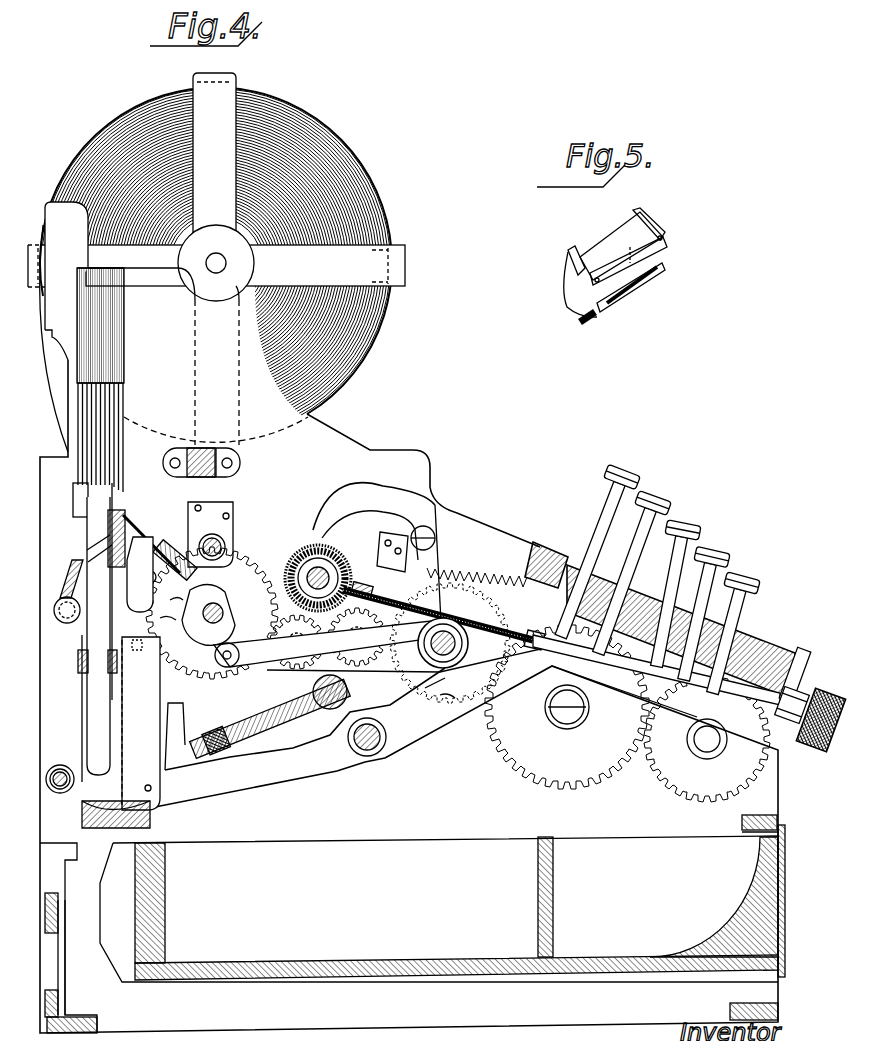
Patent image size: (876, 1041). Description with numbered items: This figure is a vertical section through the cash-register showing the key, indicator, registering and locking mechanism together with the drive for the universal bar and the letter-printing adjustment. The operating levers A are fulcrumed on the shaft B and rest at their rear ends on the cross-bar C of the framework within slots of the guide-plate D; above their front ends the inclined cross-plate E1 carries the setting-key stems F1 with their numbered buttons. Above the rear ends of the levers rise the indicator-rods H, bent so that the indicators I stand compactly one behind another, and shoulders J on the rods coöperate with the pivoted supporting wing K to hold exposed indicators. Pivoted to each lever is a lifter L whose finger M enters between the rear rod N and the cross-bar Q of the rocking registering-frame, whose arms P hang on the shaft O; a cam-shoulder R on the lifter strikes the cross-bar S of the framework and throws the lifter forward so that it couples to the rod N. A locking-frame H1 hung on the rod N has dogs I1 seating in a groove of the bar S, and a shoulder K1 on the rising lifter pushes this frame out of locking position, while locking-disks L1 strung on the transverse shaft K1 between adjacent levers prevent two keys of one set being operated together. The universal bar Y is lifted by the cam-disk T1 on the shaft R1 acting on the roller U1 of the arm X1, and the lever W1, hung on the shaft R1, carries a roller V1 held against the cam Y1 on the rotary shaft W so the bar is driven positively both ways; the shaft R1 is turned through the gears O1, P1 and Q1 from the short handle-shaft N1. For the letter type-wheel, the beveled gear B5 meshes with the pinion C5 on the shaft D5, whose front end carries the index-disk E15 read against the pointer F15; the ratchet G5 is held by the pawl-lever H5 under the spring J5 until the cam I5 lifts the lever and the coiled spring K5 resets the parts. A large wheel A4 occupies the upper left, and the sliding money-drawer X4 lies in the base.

In FIG. 4, the main spring wheel A4 is at (371, 352).
In FIG. 4, the indicators I is at (122, 340).
In FIG. 4, the bent lever H5 is at (362, 493).
In FIG. 4, the ratchet G5 is at (302, 546).
In FIG. 4, the beveled gear B5 is at (380, 555).
In FIG. 4, the beveled pinion C5 is at (360, 582).
In FIG. 4, the coiled spring K5 is at (496, 622).
In FIG. 4, the spring J5 is at (478, 571).
In FIG. 4, the shaft D5 is at (537, 632).
In FIG. 4, the end plates P is at (190, 520).
In FIG. 4, the shaft O is at (226, 548).
In FIG. 4, the rotary shaft W is at (214, 603).
In FIG. 4, the cross-bar Q is at (179, 602).
In FIG. 4, the fingers M is at (170, 624).
In FIG. 4, the cam Y1 is at (205, 645).
In FIG. 4, the lever W1 is at (255, 608).
In FIG. 4, the roller V1 is at (226, 668).
In FIG. 4, the gear Q1 is at (464, 702).
In FIG. 4, the cam-disk T1 is at (500, 668).
In FIG. 4, the shaft R1 is at (447, 668).
In FIG. 4, the roller U1 is at (444, 702).
In FIG. 4, the cam I5 is at (430, 686).
In FIG. 4, the gear P1 is at (609, 782).
In FIG. 4, the gear O1 is at (695, 800).
In FIG. 4, the short shaft N1 is at (709, 760).
In FIG. 4, the inclined cross-plate E1 is at (553, 546).
In FIG. 4, the setting-keys F1 is at (632, 537).
In FIG. 4, the index-disk E15 is at (808, 622).
In FIG. 4, the fixed pointer F15 is at (782, 645).
In FIG. 4, the levers A is at (305, 777).
In FIG. 4, the shaft B is at (372, 758).
In FIG. 4, the universal bar Y is at (276, 724).
In FIG. 4, the arm X1 is at (428, 690).
In FIG. 4, the lifter L is at (141, 723).
In FIG. 4, the cam-shoulders R is at (120, 600).
In FIG. 4, the indicator-rods H is at (100, 719).
In FIG. 4, the guide-plate D is at (82, 696).
In FIG. 4, the shoulder K1 is at (60, 764).
In FIG. 4, the locking-disks L1 is at (60, 793).
In FIG. 4, the locking-dogs I1 is at (125, 512).
In FIG. 5, the locking-dogs I1 is at (624, 230).
In FIG. 4, the locking-frame H1 is at (150, 540).
In FIG. 5, the locking-frame H1 is at (667, 234).
In FIG. 4, the supporting bar K is at (87, 550).
In FIG. 4, the cross-bar S is at (88, 562).
In FIG. 4, the rear transverse rod N is at (100, 574).
In FIG. 5, the rear transverse rod N is at (586, 321).
In FIG. 4, the shoulders J is at (133, 642).
In FIG. 4, the cross-bar C is at (409, 934).
In FIG. 4, the money-drawer X4 is at (452, 958).